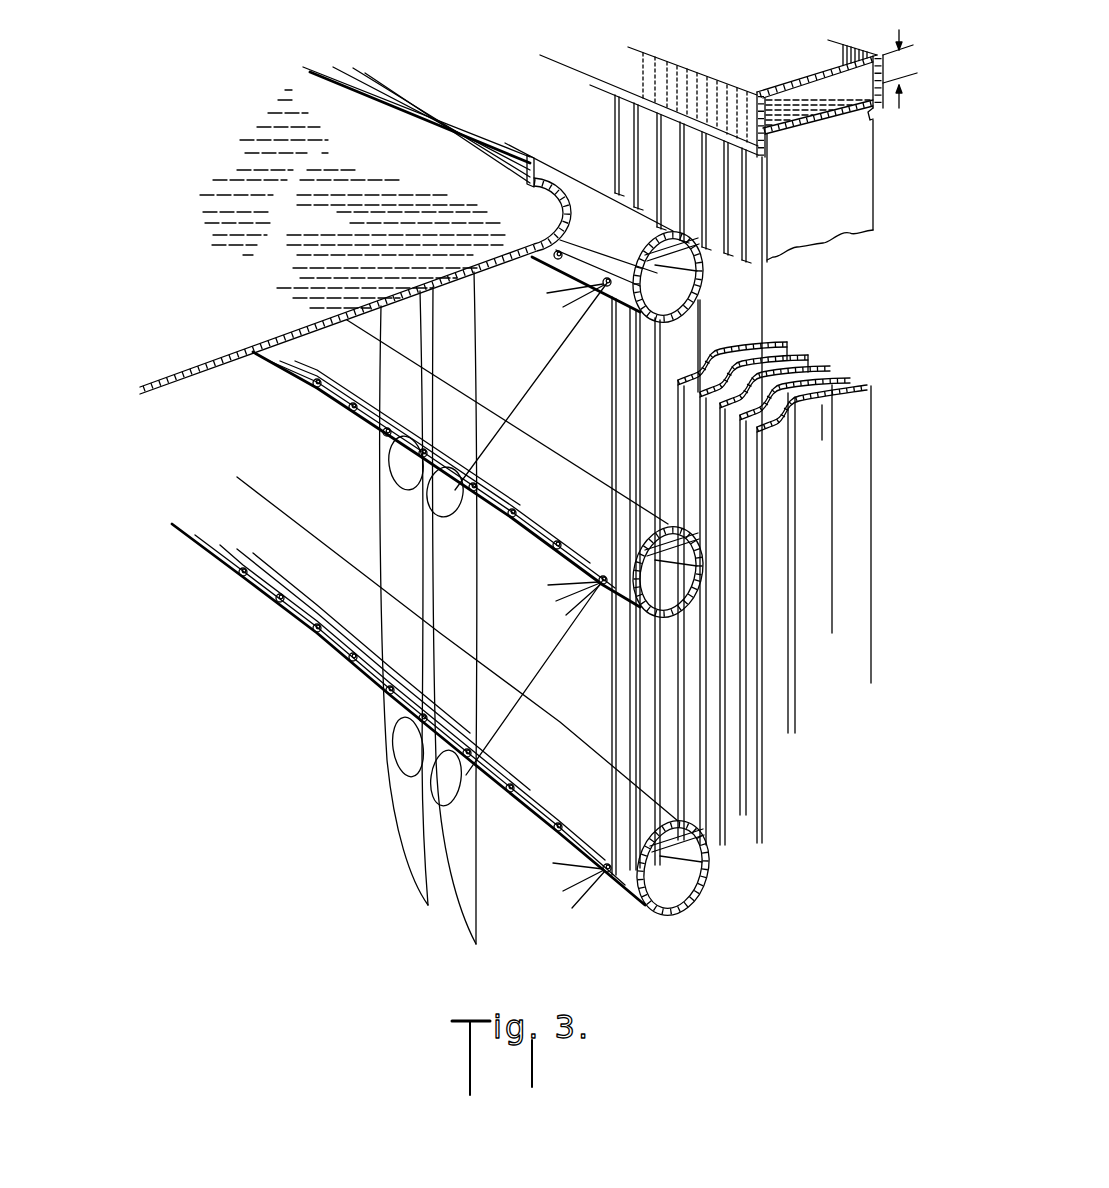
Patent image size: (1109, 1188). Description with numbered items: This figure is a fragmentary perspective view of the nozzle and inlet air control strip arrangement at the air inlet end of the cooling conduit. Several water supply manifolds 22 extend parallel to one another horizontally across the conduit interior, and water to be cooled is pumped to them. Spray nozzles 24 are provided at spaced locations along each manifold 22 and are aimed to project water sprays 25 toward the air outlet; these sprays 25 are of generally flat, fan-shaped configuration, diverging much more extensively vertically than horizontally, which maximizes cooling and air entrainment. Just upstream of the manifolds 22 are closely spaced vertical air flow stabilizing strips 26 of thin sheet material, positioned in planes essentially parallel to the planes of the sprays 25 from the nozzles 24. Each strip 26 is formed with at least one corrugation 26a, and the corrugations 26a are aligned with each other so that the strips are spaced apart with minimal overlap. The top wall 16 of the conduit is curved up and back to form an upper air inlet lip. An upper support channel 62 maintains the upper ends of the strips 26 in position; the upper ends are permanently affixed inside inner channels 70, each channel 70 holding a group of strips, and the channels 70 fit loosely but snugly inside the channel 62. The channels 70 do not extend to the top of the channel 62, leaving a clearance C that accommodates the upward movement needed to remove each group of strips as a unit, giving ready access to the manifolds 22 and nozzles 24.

The top wall 16 is at (315, 332).
The water supply manifold 22 is at (572, 176).
The spray nozzle 24 is at (605, 278).
The water spray 25 is at (546, 372).
The air flow stabilizing strip 26 is at (814, 356).
The corrugation 26a is at (757, 348).
The upper support channel 62 is at (707, 67).
The inner channel 70 is at (832, 108).
The clearance C is at (900, 69).